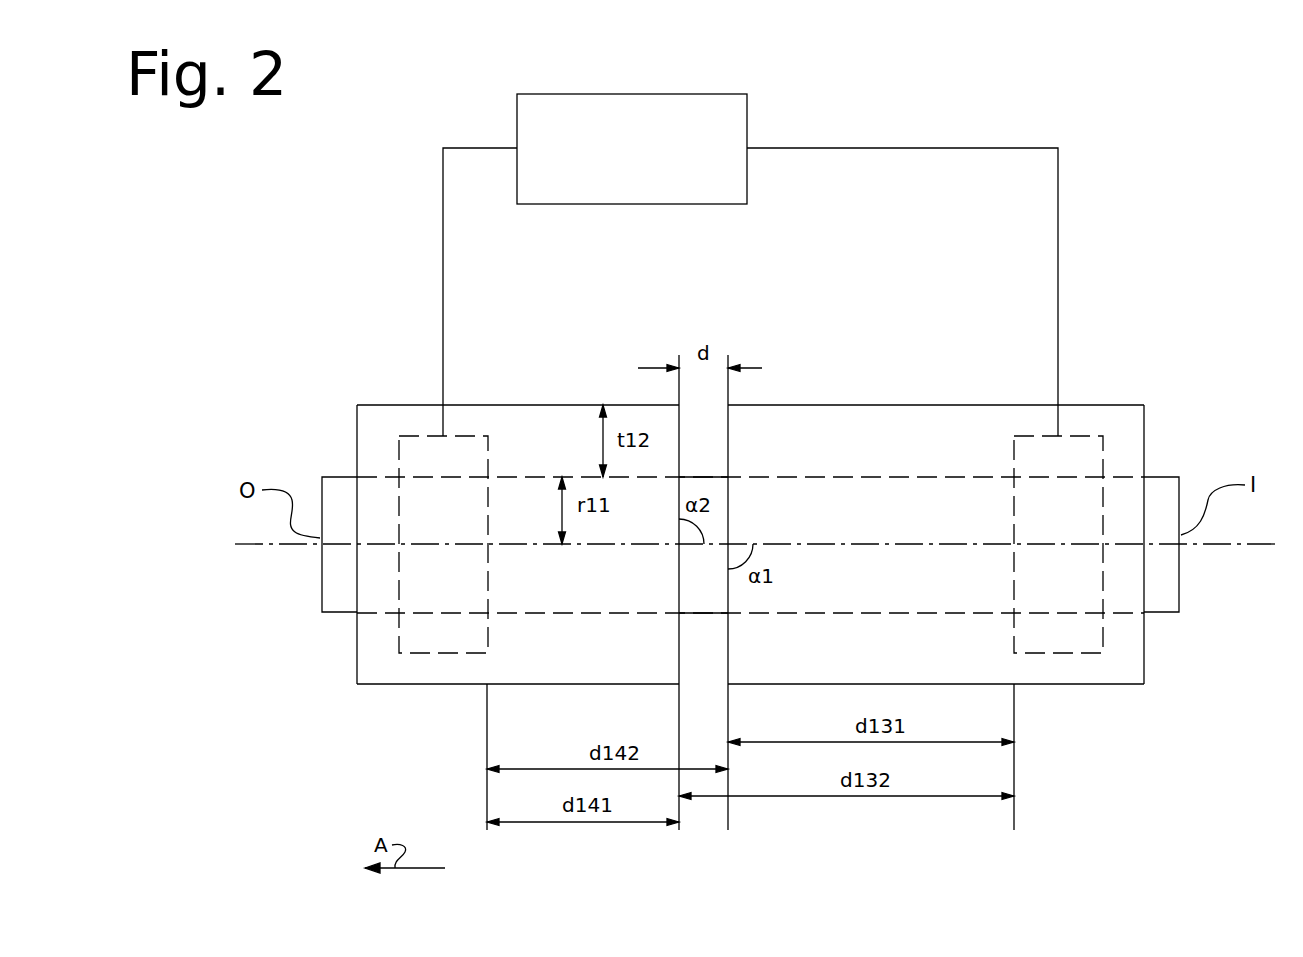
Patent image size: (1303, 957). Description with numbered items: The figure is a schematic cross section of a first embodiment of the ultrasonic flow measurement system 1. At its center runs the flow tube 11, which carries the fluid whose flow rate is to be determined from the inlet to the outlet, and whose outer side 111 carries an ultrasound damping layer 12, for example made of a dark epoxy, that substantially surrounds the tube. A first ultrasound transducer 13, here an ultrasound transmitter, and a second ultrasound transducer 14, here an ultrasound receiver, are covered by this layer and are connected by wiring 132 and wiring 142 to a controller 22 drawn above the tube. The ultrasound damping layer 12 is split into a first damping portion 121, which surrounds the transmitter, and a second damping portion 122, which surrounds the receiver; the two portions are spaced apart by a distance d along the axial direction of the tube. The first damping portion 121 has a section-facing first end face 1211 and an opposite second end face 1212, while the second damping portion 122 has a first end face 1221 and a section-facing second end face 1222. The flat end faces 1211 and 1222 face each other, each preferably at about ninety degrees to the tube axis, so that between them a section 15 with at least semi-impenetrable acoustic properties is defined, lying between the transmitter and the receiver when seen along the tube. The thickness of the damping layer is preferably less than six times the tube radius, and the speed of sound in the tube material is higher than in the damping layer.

The ultrasonic flow measurement system 1 is at (750, 587).
The flow tube 11 is at (750, 602).
The outer side 111 is at (331, 581).
The ultrasound damping layer 12 is at (751, 584).
The first damping portion 121 is at (988, 584).
The first end face 1211 is at (728, 630).
The second end face 1212 is at (1145, 440).
The second damping portion 122 is at (468, 586).
The first end face 1221 is at (358, 647).
The second end face 1222 is at (677, 645).
The first ultrasound transducer 13 is at (1076, 455).
The wiring 132 is at (1059, 195).
The second ultrasound transducer 14 is at (428, 458).
The wiring 142 is at (441, 212).
The section 15 is at (713, 442).
The controller 22 is at (710, 120).